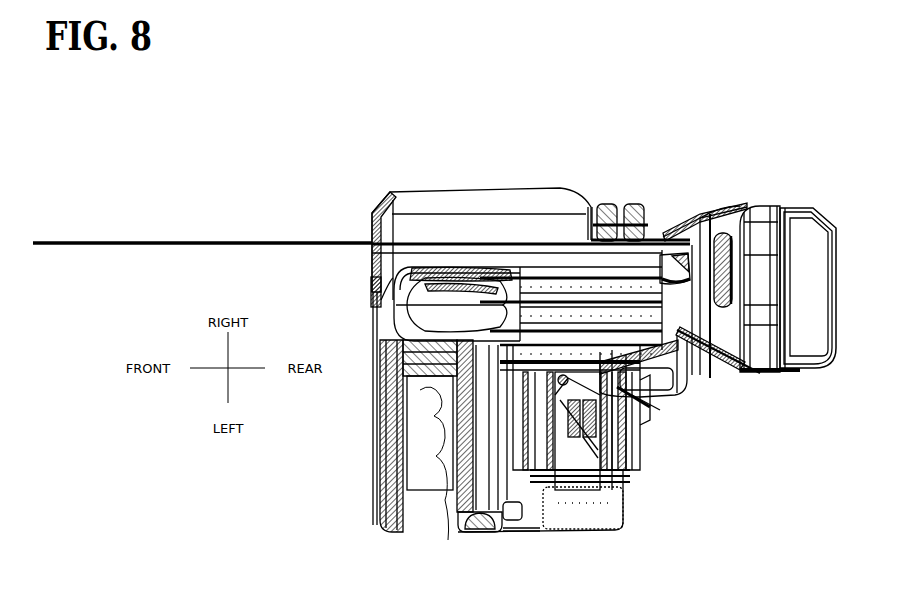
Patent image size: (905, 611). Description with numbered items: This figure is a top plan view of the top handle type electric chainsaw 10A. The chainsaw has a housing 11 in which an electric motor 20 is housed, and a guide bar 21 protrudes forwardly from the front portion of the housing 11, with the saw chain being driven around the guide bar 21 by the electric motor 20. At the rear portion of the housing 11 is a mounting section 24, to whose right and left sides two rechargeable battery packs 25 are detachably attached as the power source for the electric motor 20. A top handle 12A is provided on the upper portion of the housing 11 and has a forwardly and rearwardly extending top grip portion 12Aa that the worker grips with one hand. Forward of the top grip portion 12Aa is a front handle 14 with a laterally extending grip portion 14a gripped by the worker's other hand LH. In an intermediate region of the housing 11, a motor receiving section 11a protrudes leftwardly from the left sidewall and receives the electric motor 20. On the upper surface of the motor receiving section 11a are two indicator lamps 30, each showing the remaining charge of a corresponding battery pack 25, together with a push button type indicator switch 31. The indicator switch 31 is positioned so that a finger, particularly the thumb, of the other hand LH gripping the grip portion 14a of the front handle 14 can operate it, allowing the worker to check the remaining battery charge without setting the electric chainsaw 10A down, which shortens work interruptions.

The top handle type electric chainsaw 10A is at (392, 157).
The housing 11 is at (438, 210).
The motor receiving section 11a is at (613, 497).
The top handle 12A is at (517, 290).
The top grip portion 12Aa is at (572, 270).
The front handle 14 is at (498, 530).
The grip portion 14a is at (453, 533).
The electric motor 20 is at (632, 432).
The guide bar 21 is at (243, 240).
The mounting section 24 is at (758, 210).
The battery packs 25 is at (800, 225).
The indicator lamps 30 is at (628, 460).
The indicator switch 31 is at (632, 405).
The other hand LH is at (535, 500).